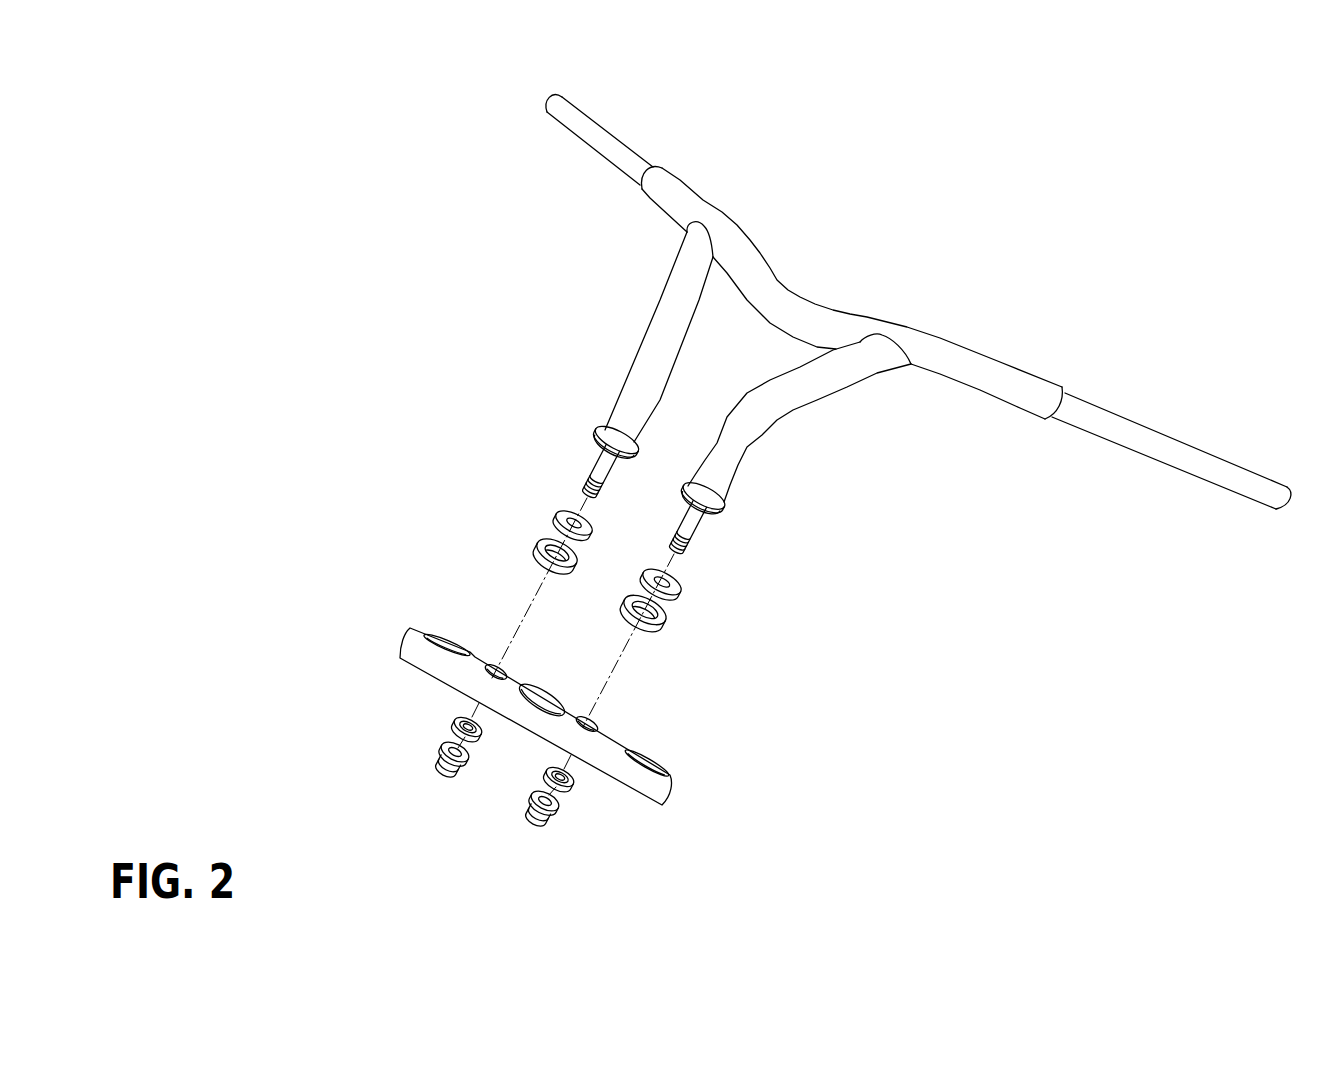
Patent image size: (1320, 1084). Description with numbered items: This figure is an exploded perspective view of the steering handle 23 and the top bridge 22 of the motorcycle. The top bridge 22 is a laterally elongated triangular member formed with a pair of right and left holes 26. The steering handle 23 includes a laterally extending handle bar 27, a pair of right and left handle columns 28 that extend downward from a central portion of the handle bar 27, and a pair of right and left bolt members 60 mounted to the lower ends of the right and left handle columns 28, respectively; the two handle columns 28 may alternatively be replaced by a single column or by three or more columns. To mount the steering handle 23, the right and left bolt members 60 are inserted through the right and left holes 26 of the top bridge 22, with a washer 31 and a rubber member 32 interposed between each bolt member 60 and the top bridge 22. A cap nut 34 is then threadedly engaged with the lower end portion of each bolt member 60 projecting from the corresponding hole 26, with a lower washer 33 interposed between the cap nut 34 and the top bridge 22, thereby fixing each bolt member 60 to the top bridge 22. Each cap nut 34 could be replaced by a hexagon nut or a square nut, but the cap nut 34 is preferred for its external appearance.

The top bridge 22 is at (667, 797).
The steering handle 23 is at (852, 425).
The holes 26 is at (497, 668).
The handle bar 27 is at (817, 312).
The handle columns 28 is at (642, 368).
The washer 31 is at (555, 513).
The rubber member 32 is at (537, 547).
The lower washer 33 is at (455, 722).
The cap nut 34 is at (442, 770).
The bolt members 60 is at (590, 464).